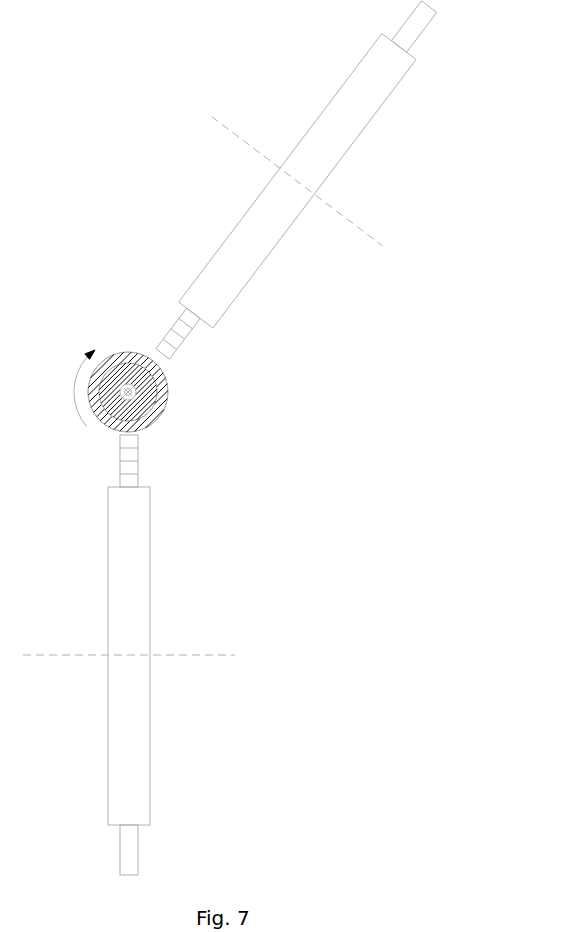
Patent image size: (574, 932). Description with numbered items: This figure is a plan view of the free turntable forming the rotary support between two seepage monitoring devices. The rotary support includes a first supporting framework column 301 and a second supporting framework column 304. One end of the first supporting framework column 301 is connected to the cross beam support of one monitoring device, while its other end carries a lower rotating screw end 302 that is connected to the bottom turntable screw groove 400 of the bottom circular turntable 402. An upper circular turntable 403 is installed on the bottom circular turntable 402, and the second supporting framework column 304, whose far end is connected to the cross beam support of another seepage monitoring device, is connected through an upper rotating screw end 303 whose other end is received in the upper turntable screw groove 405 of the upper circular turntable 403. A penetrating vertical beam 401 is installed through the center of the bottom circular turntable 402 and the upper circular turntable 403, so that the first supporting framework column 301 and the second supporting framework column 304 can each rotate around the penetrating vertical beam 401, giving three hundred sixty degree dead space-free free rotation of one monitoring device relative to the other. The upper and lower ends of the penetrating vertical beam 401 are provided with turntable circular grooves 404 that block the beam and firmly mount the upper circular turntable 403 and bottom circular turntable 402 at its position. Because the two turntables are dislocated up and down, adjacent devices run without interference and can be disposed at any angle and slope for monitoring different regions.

The first supporting framework column 301 is at (148, 698).
The lower rotating screw end 302 is at (120, 452).
The upper rotating screw end 303 is at (182, 345).
The second supporting framework column 304 is at (268, 215).
The bottom turntable screw groove 400 is at (165, 400).
The penetrating vertical beam 401 is at (157, 418).
The bottom circular turntable 402 is at (107, 360).
The upper circular turntable 403 is at (125, 370).
The turntable circular groove 404 is at (130, 384).
The upper turntable screw groove 405 is at (140, 368).